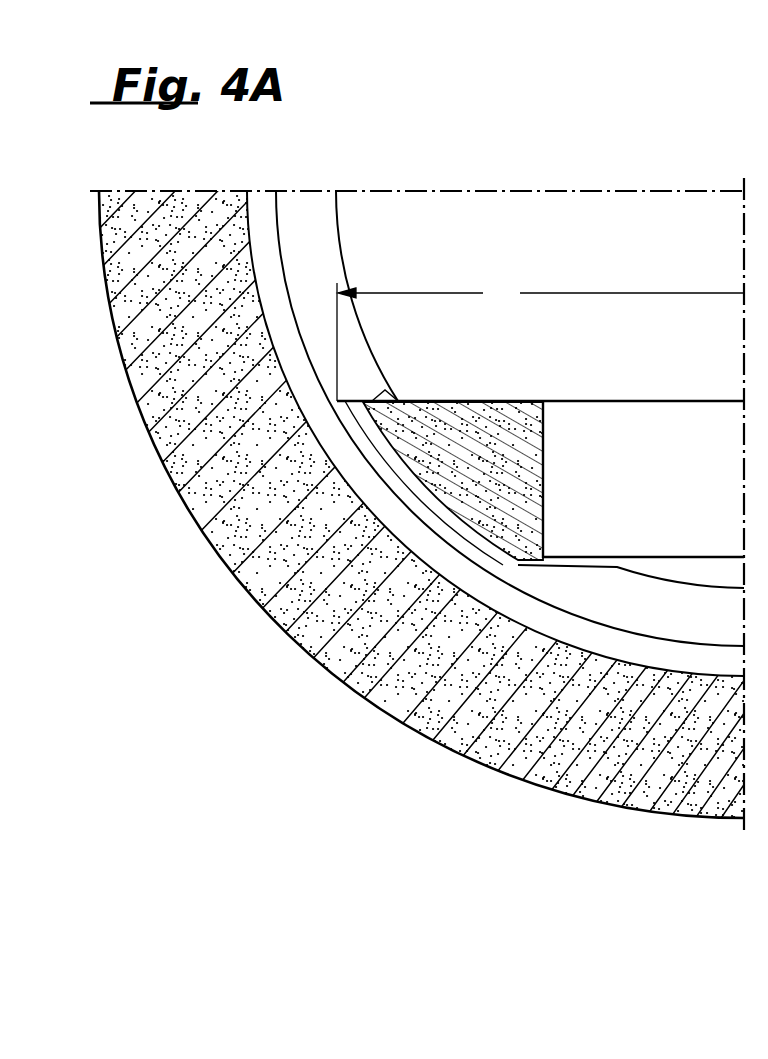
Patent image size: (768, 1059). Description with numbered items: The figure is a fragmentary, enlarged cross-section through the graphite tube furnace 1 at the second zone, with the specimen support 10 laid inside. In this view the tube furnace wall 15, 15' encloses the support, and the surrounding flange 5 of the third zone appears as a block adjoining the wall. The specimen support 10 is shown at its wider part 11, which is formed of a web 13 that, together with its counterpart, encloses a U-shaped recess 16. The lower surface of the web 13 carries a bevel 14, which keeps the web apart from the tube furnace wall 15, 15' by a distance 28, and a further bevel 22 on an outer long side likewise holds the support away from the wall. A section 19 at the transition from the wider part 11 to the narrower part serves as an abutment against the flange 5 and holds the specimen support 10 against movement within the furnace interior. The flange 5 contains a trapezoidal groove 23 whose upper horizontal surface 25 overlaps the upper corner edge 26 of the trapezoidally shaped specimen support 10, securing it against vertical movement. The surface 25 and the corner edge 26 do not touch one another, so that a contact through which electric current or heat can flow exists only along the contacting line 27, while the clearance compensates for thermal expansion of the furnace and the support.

The graphite tube furnace 1 is at (230, 572).
The surrounding flange of zone III 5 is at (328, 216).
The specimen support 10 is at (611, 400).
The wider part 11 is at (541, 295).
The web 13 is at (526, 412).
The bevel 14 is at (477, 538).
The tube furnace wall 15 is at (495, 416).
The tube furnace wall 15' is at (510, 418).
The U-shaped recess 16 is at (718, 418).
The section at transition 19 is at (400, 487).
The bevel 22 is at (550, 531).
The groove 23 is at (546, 481).
The upper horizontal surface 25 is at (382, 393).
The upper corner edge 26 is at (395, 420).
The contacting line 27 is at (341, 431).
The distance 28 is at (428, 514).